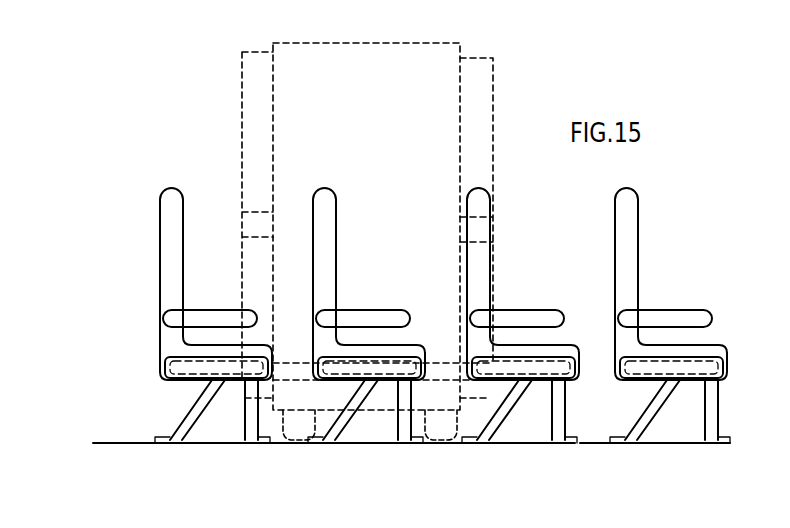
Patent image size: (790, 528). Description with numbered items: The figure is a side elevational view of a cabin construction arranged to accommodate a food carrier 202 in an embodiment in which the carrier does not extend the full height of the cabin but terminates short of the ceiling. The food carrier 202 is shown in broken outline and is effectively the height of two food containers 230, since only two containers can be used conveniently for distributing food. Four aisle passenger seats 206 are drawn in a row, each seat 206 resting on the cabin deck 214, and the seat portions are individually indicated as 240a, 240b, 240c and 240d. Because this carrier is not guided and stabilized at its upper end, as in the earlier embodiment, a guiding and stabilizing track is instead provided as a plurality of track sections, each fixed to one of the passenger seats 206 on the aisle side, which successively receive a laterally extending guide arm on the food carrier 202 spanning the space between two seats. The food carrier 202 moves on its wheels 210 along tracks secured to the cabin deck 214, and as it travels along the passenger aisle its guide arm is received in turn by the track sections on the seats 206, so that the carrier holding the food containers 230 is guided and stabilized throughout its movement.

The food carrier 202 is at (381, 47).
The aisle passenger seat 206 is at (162, 236).
The wheel 210 is at (436, 442).
The cabin deck 214 is at (106, 443).
The food container 230 is at (487, 75).
The seat 240a is at (162, 346).
The seat 240b is at (440, 333).
The seat 240c is at (578, 355).
The seat 240d is at (726, 355).